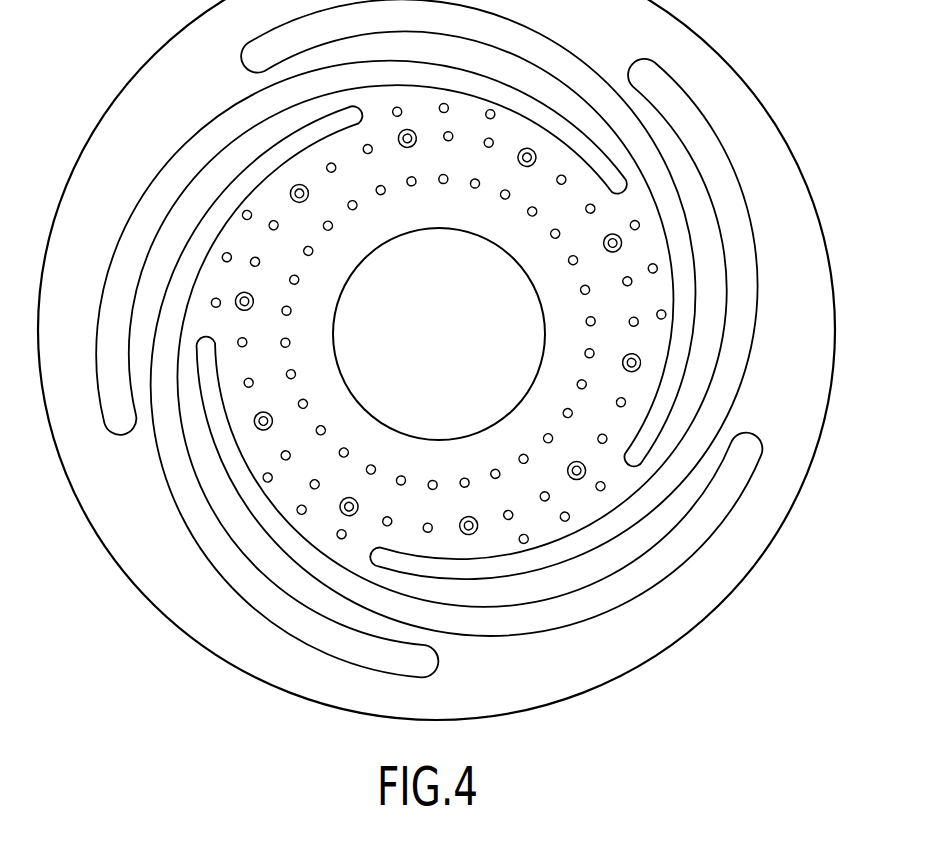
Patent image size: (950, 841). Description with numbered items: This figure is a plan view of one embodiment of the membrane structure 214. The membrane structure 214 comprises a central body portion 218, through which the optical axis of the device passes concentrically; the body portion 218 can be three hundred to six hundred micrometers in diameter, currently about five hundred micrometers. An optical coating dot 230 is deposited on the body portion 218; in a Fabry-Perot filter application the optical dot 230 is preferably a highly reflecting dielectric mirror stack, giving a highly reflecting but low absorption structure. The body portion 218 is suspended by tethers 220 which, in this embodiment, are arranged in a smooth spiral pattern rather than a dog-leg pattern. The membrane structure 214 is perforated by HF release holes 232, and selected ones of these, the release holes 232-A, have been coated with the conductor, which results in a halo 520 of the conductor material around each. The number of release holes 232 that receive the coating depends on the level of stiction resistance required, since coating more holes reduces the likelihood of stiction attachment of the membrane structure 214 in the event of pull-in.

The membrane structure 214 is at (766, 166).
The body portion 218 is at (478, 478).
The tethers 220 is at (237, 164).
The optical coating dot 230 is at (462, 351).
The release holes 232 is at (633, 285).
The release holes coated with the conductor 232-A is at (585, 470).
The halo 520 is at (642, 362).